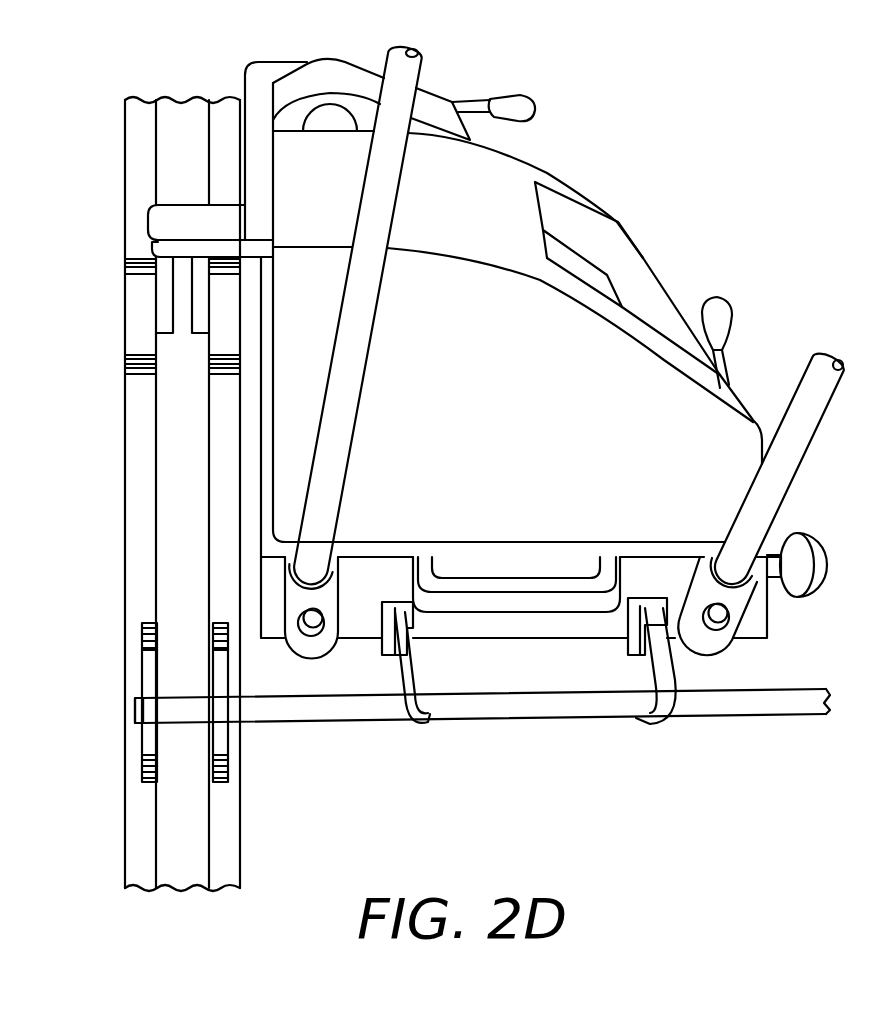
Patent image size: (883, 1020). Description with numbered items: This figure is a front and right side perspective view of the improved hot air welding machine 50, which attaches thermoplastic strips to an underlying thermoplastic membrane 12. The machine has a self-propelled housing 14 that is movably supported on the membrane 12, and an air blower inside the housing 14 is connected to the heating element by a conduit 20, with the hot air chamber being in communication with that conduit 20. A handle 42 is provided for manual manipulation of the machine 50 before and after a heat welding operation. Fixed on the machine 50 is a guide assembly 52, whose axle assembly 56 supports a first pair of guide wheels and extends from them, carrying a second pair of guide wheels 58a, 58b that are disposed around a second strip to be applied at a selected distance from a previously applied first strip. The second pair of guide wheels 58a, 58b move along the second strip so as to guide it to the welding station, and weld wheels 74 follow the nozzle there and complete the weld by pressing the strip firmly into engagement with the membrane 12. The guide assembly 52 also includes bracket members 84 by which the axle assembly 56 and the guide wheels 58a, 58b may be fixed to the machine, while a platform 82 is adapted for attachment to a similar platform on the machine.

The thermoplastic membrane 12 is at (524, 775).
The housing 14 is at (507, 213).
The conduit 20 is at (327, 120).
The handle 42 is at (418, 76).
The improved machine 50 is at (682, 216).
The guide assembly 52 is at (105, 710).
The axle assembly 56 is at (767, 718).
The guide wheel 58a is at (228, 752).
The guide wheel 58b is at (142, 752).
The weld wheels 74 is at (222, 374).
The platform 82 is at (158, 212).
The bracket members 84 is at (418, 672).